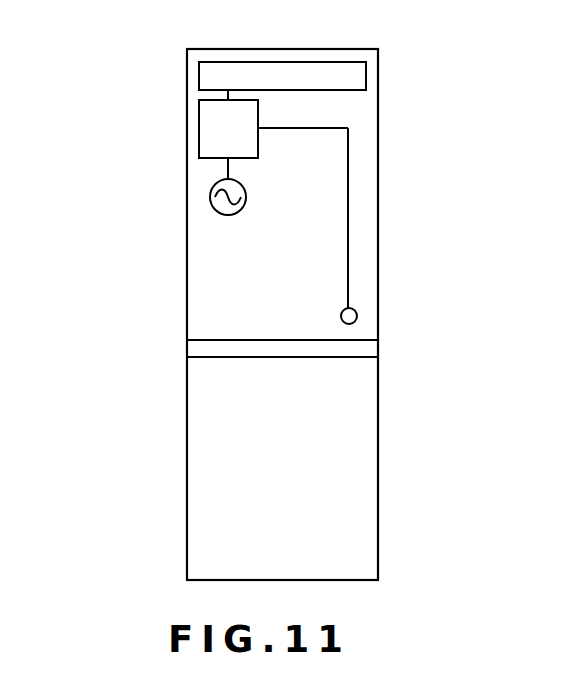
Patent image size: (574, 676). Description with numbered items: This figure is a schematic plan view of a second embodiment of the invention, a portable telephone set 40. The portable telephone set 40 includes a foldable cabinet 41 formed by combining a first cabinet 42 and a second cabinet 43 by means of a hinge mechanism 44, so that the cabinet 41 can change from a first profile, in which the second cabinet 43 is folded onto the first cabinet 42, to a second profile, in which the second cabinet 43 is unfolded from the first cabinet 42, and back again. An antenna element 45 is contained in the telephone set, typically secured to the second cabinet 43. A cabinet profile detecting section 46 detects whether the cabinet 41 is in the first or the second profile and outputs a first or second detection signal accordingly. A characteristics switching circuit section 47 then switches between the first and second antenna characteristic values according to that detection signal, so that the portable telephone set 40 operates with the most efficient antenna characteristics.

The portable telephone set 40 is at (90, 79).
The foldable cabinet 41 is at (102, 300).
The first cabinet 42 is at (200, 403).
The second cabinet 43 is at (200, 321).
The hinge mechanism 44 is at (364, 349).
The antenna element 45 is at (357, 73).
The cabinet profile detecting section 46 is at (357, 315).
The characteristics switching circuit section 47 is at (199, 118).